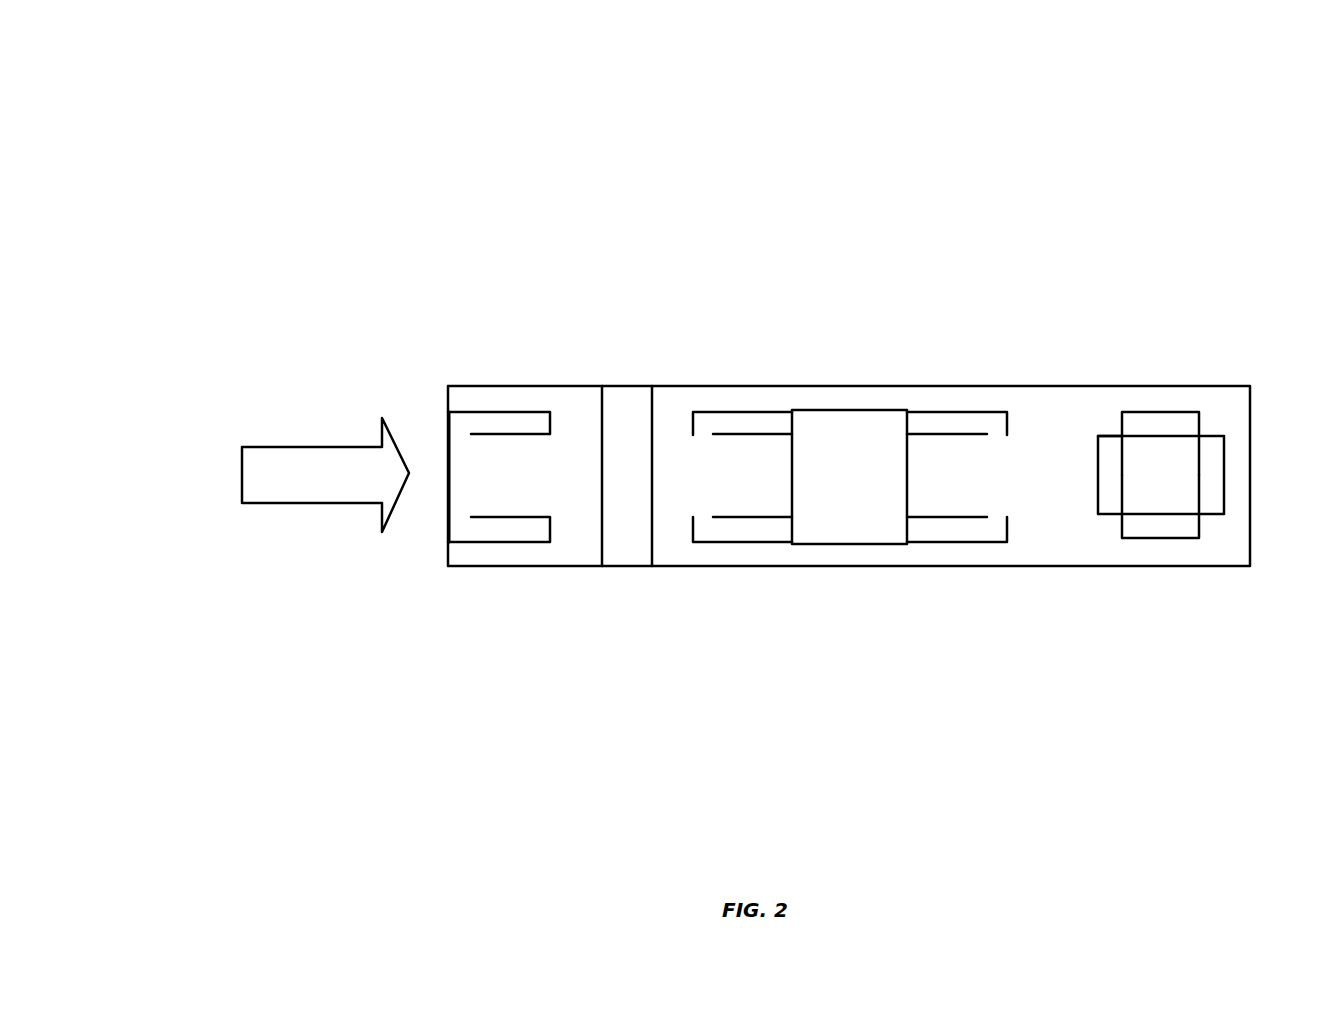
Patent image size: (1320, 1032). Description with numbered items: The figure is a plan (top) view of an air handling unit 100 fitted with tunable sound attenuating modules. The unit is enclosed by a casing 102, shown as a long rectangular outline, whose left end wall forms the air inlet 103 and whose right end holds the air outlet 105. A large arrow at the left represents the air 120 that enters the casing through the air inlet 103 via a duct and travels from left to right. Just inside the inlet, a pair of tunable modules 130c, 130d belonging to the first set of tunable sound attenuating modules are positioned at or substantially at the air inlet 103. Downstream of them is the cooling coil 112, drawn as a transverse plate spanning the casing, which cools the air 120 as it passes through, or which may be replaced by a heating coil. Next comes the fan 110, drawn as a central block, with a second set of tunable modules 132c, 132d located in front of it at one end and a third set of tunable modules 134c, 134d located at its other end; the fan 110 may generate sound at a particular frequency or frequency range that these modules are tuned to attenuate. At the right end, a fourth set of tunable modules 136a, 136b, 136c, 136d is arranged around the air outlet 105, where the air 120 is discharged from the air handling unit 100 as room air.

The air handling unit 100 is at (238, 95).
The casing 102 is at (588, 386).
The air inlet 103 is at (436, 443).
The air outlet 105 is at (1115, 427).
The fan 110 is at (848, 544).
The cooling coil 112 is at (623, 568).
The air 120 is at (242, 447).
The tunable module 130c is at (505, 412).
The tunable module 130d is at (497, 542).
The tunable module 132c is at (745, 412).
The tunable module 132d is at (745, 542).
The tunable module 134c is at (965, 412).
The tunable module 134d is at (960, 542).
The tunable module 136a is at (1098, 436).
The tunable module 136b is at (1224, 460).
The tunable module 136c is at (1158, 412).
The tunable module 136d is at (1163, 538).